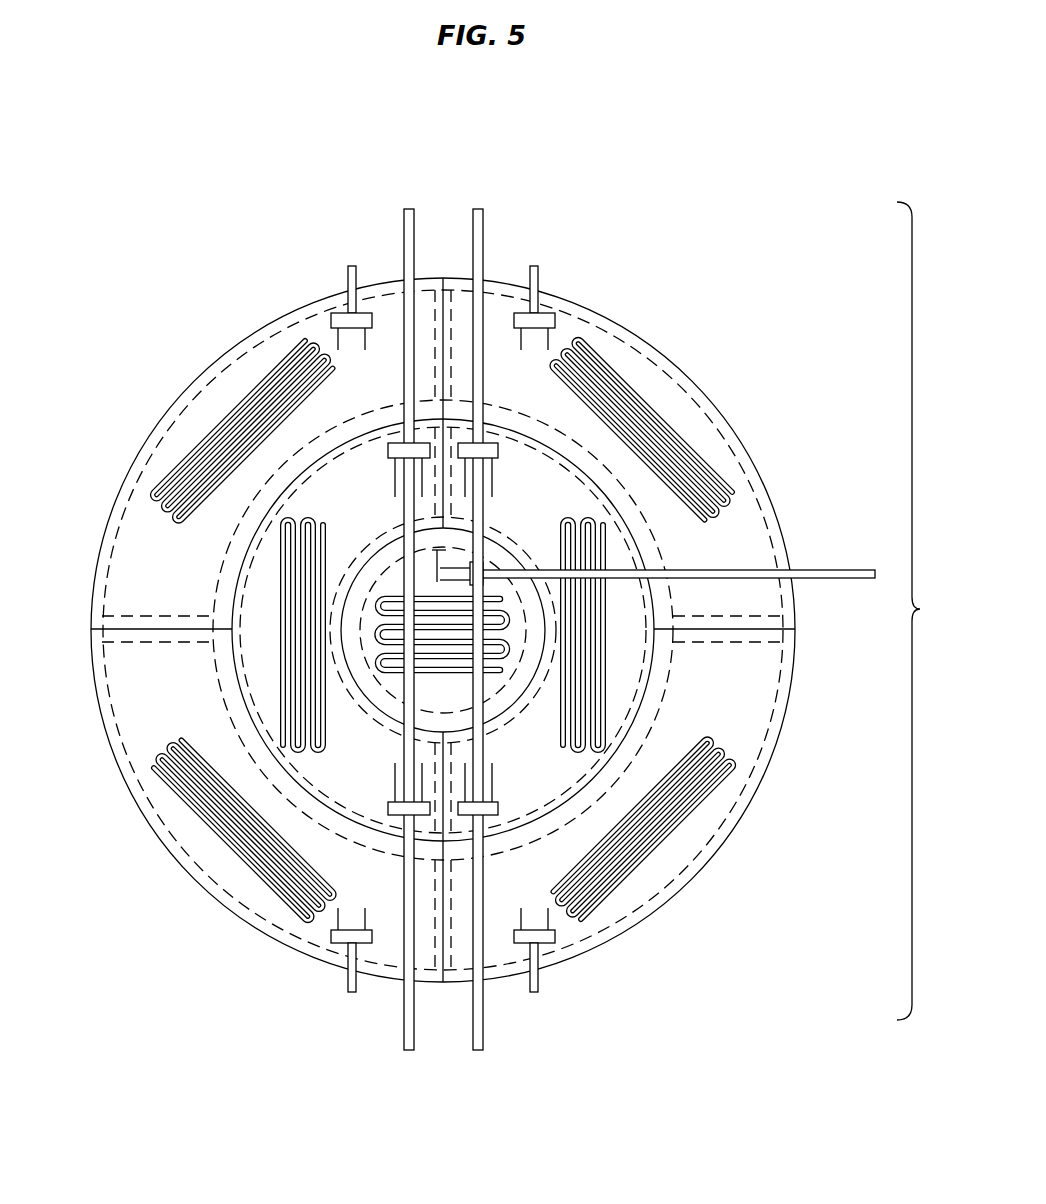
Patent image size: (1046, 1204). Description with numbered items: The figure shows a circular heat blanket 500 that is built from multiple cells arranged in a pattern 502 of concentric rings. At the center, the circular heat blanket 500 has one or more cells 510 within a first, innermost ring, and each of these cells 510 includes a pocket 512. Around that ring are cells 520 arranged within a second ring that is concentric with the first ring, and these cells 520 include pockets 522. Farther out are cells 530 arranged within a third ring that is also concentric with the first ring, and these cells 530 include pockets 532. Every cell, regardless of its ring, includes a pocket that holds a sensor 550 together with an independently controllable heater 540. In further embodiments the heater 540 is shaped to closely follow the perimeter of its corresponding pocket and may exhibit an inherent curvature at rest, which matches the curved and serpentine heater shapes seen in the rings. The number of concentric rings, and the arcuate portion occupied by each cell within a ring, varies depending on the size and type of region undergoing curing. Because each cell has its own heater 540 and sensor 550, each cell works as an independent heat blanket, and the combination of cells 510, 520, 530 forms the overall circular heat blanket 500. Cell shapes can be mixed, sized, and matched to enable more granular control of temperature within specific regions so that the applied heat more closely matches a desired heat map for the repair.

The circular heat blanket 500 is at (113, 856).
The pattern 502 is at (930, 611).
The cells 510 is at (500, 542).
The pocket 512 is at (437, 575).
The cells 520 is at (227, 567).
The pockets 522 is at (340, 806).
The cells 530 is at (153, 426).
The pockets 532 is at (766, 511).
The independently controllable heater 540 is at (733, 486).
The sensor 550 is at (858, 570).